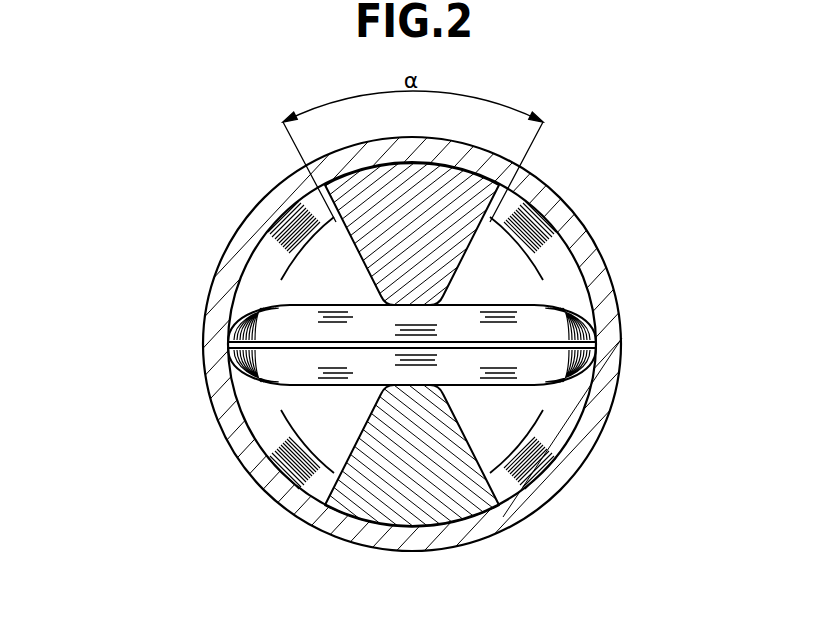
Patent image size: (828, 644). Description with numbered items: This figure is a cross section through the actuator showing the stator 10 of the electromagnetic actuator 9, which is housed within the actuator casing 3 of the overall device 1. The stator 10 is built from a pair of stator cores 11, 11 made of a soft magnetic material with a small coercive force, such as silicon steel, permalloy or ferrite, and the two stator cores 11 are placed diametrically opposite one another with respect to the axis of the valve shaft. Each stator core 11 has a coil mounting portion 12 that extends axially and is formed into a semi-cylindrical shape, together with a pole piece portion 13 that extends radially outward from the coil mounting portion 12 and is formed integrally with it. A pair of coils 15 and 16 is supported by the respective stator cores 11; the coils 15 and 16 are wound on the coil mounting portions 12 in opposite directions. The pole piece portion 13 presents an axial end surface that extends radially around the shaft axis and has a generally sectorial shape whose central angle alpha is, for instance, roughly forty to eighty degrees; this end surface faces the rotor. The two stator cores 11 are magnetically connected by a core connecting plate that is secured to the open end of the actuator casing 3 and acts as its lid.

The motor 1 is at (226, 238).
The actuator casing 3 is at (218, 286).
The electromagnetic actuator 9 is at (606, 326).
The stator 10 is at (230, 362).
The stator core 11 is at (333, 221).
The coil mounting portion 12 is at (512, 267).
The pole piece portion 13 is at (457, 178).
The coil 15 is at (570, 285).
The coil 16 is at (567, 412).